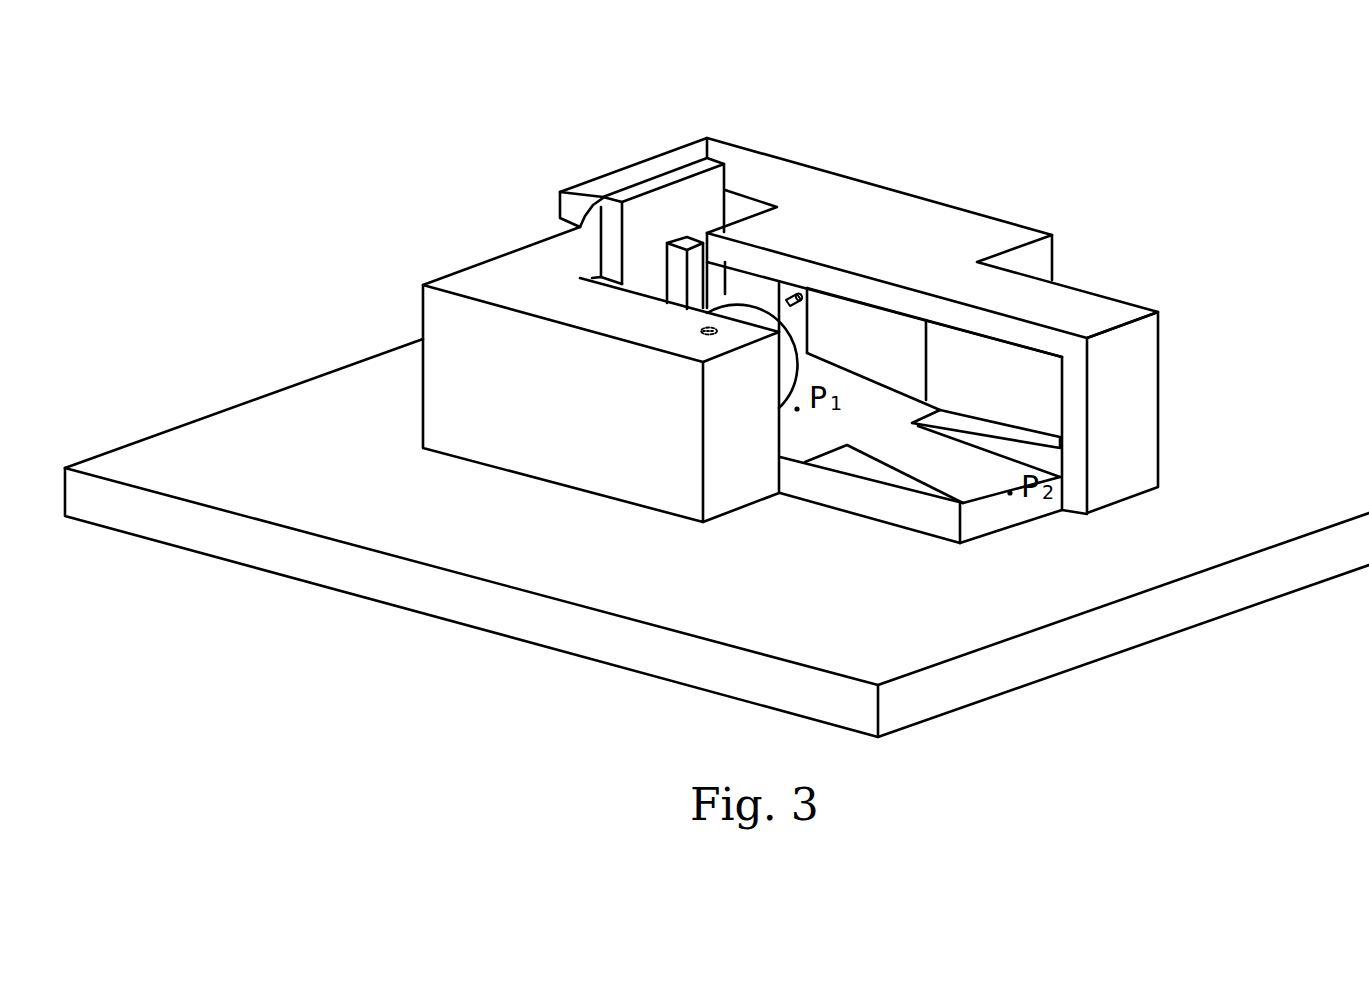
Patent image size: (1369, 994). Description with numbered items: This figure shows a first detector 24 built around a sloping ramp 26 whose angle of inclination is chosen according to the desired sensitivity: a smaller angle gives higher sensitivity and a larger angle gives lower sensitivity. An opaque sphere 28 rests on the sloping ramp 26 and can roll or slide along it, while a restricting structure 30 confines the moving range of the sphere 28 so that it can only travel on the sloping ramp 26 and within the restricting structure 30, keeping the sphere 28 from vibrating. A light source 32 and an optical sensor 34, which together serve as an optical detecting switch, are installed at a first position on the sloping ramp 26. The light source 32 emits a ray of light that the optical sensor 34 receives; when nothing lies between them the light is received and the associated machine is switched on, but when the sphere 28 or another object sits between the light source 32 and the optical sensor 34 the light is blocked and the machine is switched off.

The first detector 24 is at (1168, 140).
The sloping ramp 26 is at (962, 468).
The opaque sphere 28 is at (789, 363).
The restricting structure 30 is at (702, 427).
The light source 32 is at (700, 330).
The optical sensor 34 is at (810, 312).